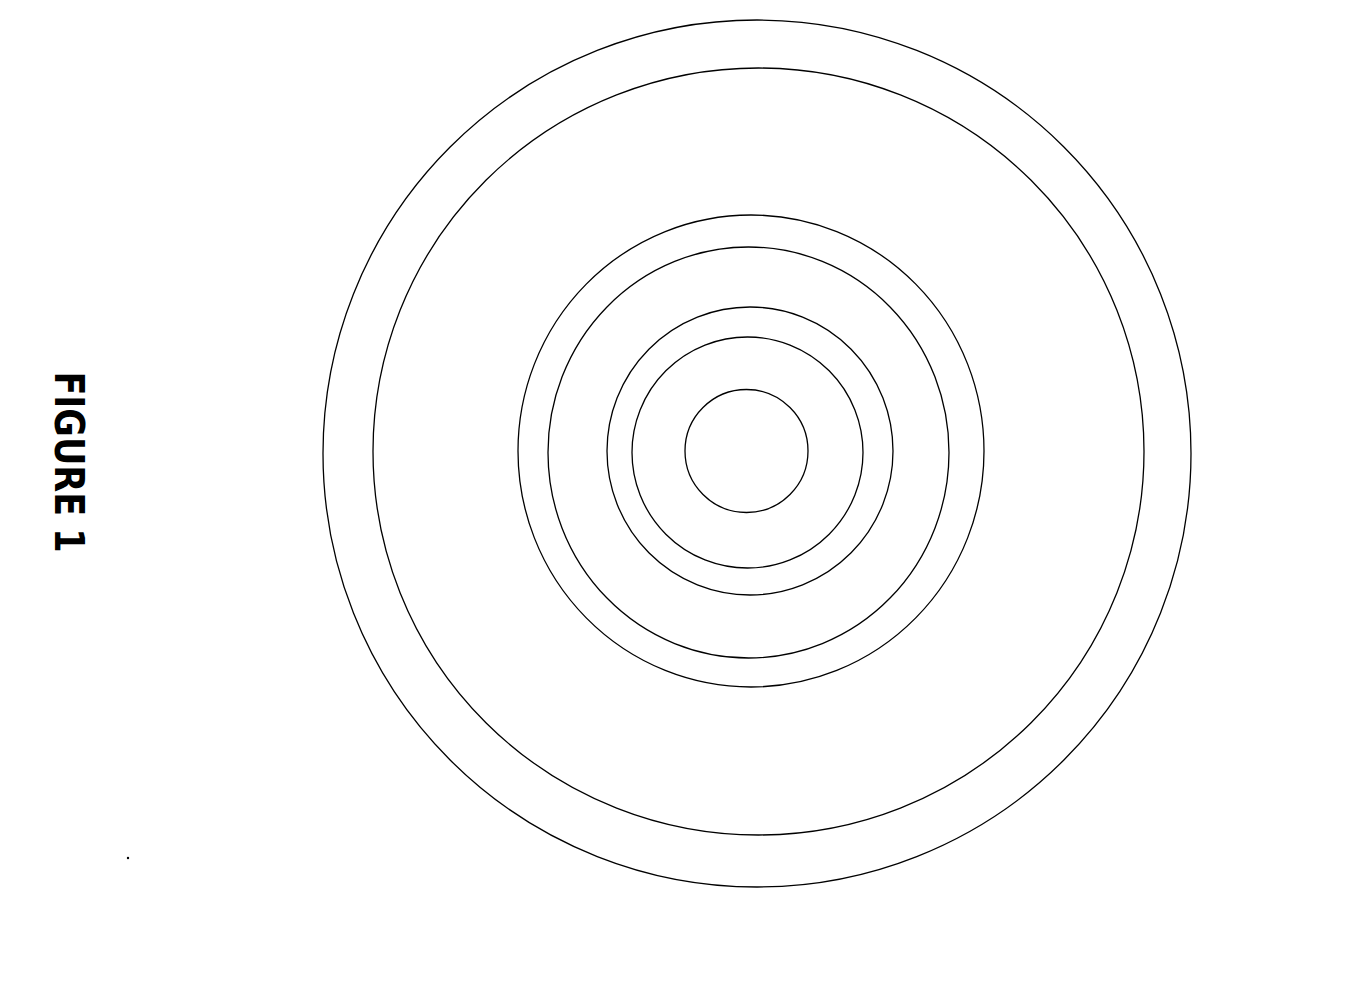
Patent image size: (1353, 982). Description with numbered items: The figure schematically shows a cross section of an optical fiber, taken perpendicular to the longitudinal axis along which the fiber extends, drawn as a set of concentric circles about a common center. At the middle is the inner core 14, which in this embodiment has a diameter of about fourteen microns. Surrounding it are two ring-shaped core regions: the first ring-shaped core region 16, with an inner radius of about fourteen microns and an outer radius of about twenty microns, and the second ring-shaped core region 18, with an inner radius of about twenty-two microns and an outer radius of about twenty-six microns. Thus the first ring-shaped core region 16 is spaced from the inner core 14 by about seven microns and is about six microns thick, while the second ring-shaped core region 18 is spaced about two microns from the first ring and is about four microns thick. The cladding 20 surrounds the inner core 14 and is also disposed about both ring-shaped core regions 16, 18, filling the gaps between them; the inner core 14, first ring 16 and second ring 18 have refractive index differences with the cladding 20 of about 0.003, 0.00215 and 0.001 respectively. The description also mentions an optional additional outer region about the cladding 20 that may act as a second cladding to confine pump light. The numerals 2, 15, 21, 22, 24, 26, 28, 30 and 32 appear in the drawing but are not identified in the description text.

The target assembly 2 is at (1245, 583).
The inner core 14 is at (725, 440).
The width of first annular region 15 is at (730, 343).
The first ring-shaped core region 16 is at (663, 557).
The second ring-shaped core region 18 is at (727, 525).
The cladding 20 is at (567, 463).
The width of second annular region 21 is at (718, 254).
The third annular region 22 is at (852, 324).
The inner boundary 24 is at (832, 433).
The central region boundary 26 is at (802, 483).
The outer ring 28 is at (962, 490).
The outer annular region 30 is at (430, 540).
The peripheral rim 32 is at (1095, 677).